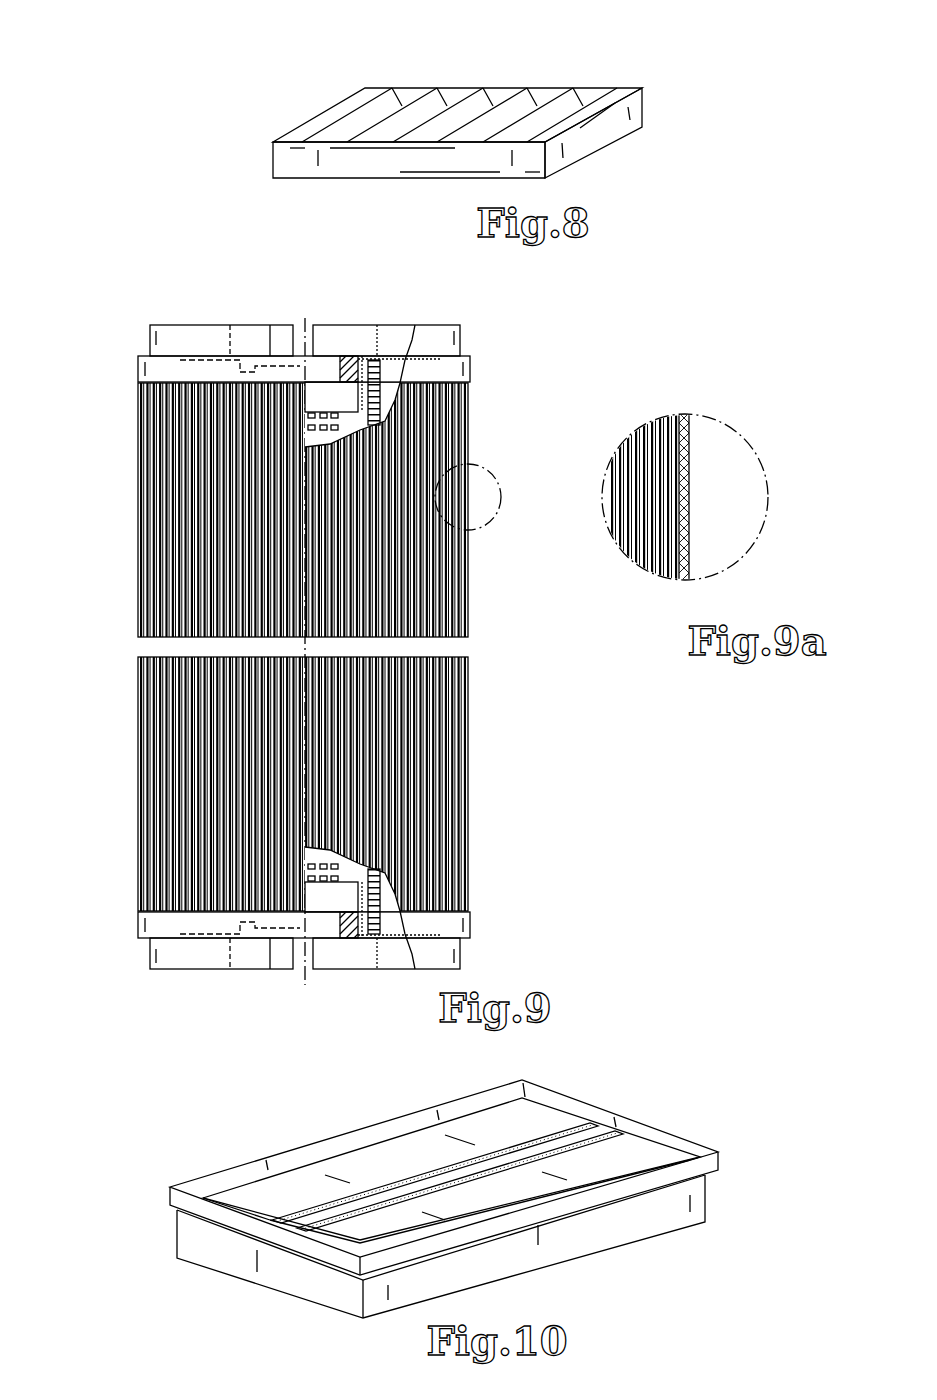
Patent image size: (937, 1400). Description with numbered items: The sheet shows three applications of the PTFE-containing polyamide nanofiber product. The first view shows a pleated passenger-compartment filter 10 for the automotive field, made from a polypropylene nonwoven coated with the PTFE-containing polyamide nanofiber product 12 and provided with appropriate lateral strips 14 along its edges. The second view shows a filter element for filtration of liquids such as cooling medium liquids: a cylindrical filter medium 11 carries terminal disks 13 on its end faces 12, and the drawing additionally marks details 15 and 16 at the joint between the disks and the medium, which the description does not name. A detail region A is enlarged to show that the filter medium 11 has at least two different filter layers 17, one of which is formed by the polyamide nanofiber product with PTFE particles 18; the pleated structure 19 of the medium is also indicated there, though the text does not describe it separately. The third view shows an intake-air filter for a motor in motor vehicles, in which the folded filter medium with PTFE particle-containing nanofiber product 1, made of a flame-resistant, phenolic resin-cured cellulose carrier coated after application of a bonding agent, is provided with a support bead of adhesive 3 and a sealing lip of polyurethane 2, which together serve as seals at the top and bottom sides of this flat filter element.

In FIG. 8, the filter 10 is at (403, 103).
In FIG. 9, the filter 10 is at (286, 618).
In FIG. 9, the filter medium 11 is at (170, 537).
In FIG. 8, the PTFE-containing polyamide nanofiber product 12 is at (567, 101).
In FIG. 9, the PTFE-containing polyamide nanofiber product 12 is at (413, 350).
In FIG. 9, the terminal disks 13 is at (152, 364).
In FIG. 8, the lateral strips 14 is at (577, 146).
In FIG. 9, the lateral strips 14 is at (478, 350).
In FIG. 9, the adhesive layer 15 is at (383, 392).
In FIG. 9, the sealing element 16 is at (347, 356).
In FIG. 9A, the filter layers 17 is at (636, 440).
In FIG. 9A, the polyamide nanofiber product with PTFE particles 18 is at (690, 475).
In FIG. 9A, the pleat 19 is at (642, 556).
In FIG. 9, the detail region A is at (478, 528).
In FIG. 10, the filter medium with PTFE particle-containing nanofiber product 1 is at (595, 1233).
In FIG. 10, the sealing lip of polyurethane 2 is at (240, 1175).
In FIG. 10, the support bead of adhesive 3 is at (572, 1125).